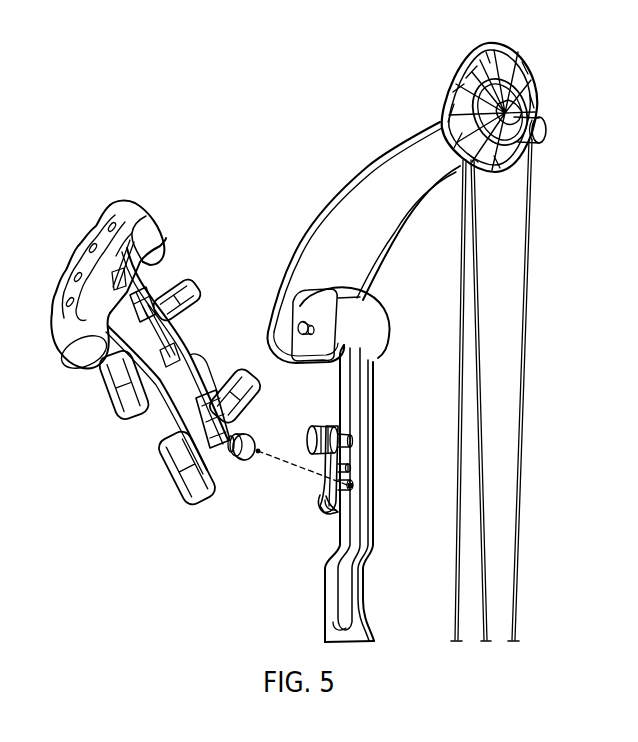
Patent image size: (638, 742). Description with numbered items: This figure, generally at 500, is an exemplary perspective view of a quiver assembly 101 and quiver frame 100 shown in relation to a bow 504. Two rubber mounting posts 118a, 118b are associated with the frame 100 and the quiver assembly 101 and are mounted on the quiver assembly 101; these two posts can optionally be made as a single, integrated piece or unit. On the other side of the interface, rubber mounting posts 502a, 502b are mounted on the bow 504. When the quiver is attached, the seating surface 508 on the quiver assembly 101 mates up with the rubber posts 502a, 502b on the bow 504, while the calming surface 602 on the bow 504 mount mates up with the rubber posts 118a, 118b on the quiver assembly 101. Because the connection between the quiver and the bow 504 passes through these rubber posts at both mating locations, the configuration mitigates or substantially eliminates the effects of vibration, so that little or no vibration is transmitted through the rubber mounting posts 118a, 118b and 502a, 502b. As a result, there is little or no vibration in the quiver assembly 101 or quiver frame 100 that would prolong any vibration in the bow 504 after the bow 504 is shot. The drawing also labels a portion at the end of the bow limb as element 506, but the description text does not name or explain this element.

The quiver frame 100 is at (176, 406).
The quiver assembly 101 is at (113, 436).
The rubber mounting post 118a is at (228, 484).
The rubber mounting post 118b is at (242, 460).
The perspective view of quiver assembly and frame in relation to a bow 500 is at (58, 218).
The rubber mounting post 502a is at (307, 437).
The rubber mounting post 502b is at (326, 430).
The bow 504 is at (324, 594).
The cam 506 is at (542, 72).
The seating surface 508 is at (236, 388).
The calming surface 602 is at (320, 507).